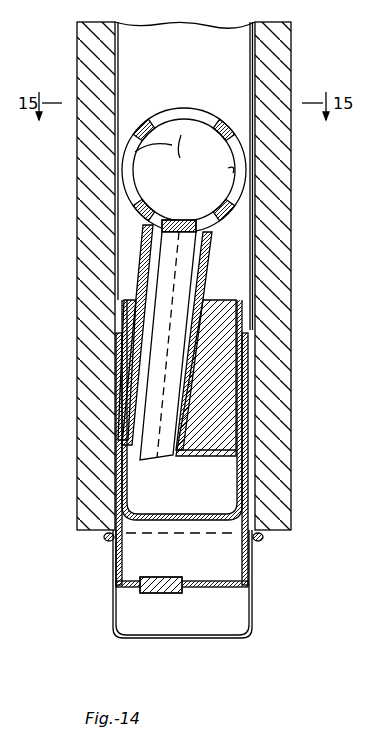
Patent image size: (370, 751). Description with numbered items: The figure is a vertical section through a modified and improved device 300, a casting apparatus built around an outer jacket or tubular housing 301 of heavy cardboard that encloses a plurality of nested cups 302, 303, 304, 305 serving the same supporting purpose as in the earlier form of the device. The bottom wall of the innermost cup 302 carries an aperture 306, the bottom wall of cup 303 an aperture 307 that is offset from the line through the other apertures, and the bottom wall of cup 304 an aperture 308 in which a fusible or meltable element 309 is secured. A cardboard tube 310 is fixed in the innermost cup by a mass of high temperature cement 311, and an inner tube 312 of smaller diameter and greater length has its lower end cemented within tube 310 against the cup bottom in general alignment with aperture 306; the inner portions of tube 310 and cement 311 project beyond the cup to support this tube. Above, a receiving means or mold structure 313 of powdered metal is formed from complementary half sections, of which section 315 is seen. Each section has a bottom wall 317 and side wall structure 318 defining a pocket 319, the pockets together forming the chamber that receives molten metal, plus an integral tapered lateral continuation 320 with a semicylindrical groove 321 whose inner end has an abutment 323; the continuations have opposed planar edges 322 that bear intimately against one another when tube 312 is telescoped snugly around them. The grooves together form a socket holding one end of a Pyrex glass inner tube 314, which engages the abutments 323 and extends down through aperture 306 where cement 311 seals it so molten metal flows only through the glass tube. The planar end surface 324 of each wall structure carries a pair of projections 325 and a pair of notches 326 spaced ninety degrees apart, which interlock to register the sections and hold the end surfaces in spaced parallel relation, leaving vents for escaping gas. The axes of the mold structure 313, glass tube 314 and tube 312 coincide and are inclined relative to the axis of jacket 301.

The device 300 is at (300, 40).
The outer jacket or tubular housing 301 is at (292, 60).
The innermost cup 302 is at (117, 355).
The cup 303 is at (118, 456).
The cup 304 is at (117, 502).
The cup 305 is at (114, 602).
The aperture 306 is at (178, 452).
The aperture 307 is at (210, 520).
The aperture 308 is at (207, 595).
The fusible or meltable element 309 is at (158, 590).
The tube 310 is at (130, 307).
The mass of high temperature cement 311 is at (196, 448).
The inner tube 312 is at (150, 270).
The receiving means or mold structure 313 is at (189, 103).
The inner tube 314 is at (175, 252).
The half or complementary section 315 is at (121, 165).
The bottom wall 317 is at (230, 172).
The side wall structure 318 is at (240, 193).
The pocket or recess 319 is at (243, 172).
The radial or tapered lateral continuation 320 is at (198, 258).
The semicylindrical groove 321 is at (154, 264).
The longitudinally extending planar edge 322 is at (152, 283).
The abutment 323 is at (172, 222).
The planar end surface 324 is at (173, 146).
The projection 325 is at (140, 124).
The notch or recess 326 is at (236, 130).